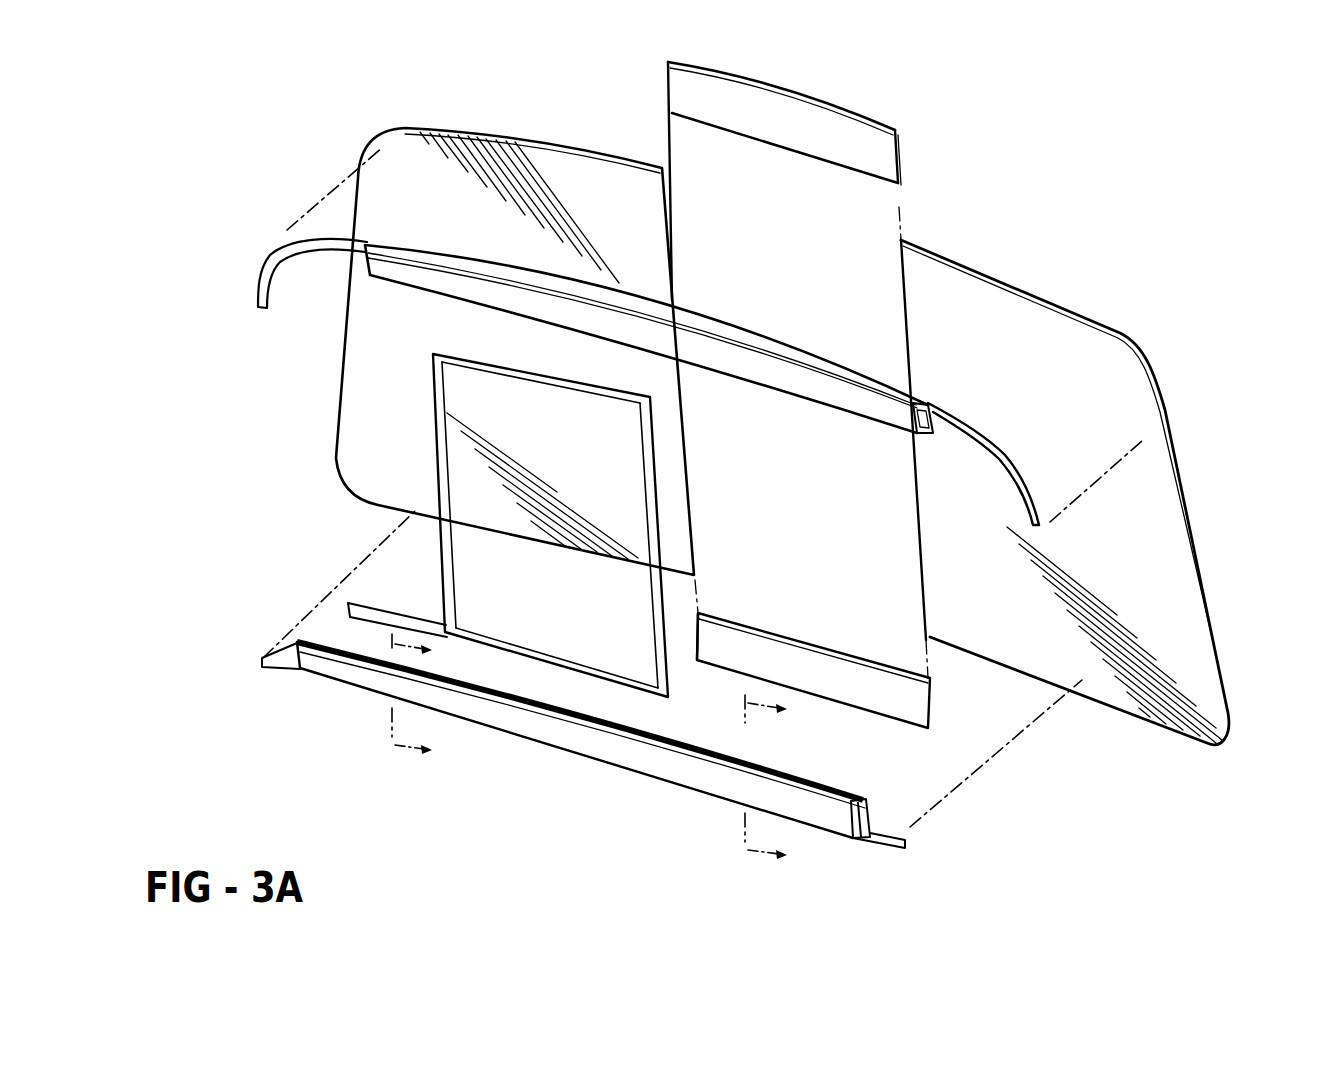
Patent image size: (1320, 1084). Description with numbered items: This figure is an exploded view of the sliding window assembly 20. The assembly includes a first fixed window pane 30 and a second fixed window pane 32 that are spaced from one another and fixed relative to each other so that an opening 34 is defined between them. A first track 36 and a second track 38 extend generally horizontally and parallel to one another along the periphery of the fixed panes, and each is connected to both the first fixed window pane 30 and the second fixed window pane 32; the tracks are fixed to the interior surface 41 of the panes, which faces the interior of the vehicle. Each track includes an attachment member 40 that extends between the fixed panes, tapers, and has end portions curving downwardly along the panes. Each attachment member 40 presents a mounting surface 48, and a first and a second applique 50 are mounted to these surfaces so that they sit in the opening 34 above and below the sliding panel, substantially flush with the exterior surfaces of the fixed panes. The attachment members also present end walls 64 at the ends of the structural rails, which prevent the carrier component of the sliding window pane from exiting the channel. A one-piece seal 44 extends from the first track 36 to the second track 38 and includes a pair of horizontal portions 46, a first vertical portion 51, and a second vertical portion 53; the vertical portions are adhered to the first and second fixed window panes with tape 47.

The sliding window assembly 20 is at (1168, 400).
The first fixed window pane 30 is at (468, 224).
The second fixed window pane 32 is at (1022, 390).
The opening 34 is at (730, 228).
The first track 36 is at (614, 526).
The second track 38 is at (653, 747).
The attachment member 40 is at (1032, 488).
The interior surface 41 is at (557, 157).
The seal 44 is at (440, 608).
The horizontal portions 46 is at (541, 566).
The tape 47 is at (445, 390).
The mounting surface 48 is at (800, 340).
The applique 50 is at (767, 102).
The first vertical portion 51 is at (437, 483).
The second vertical portion 53 is at (637, 452).
The end walls 64 is at (360, 253).